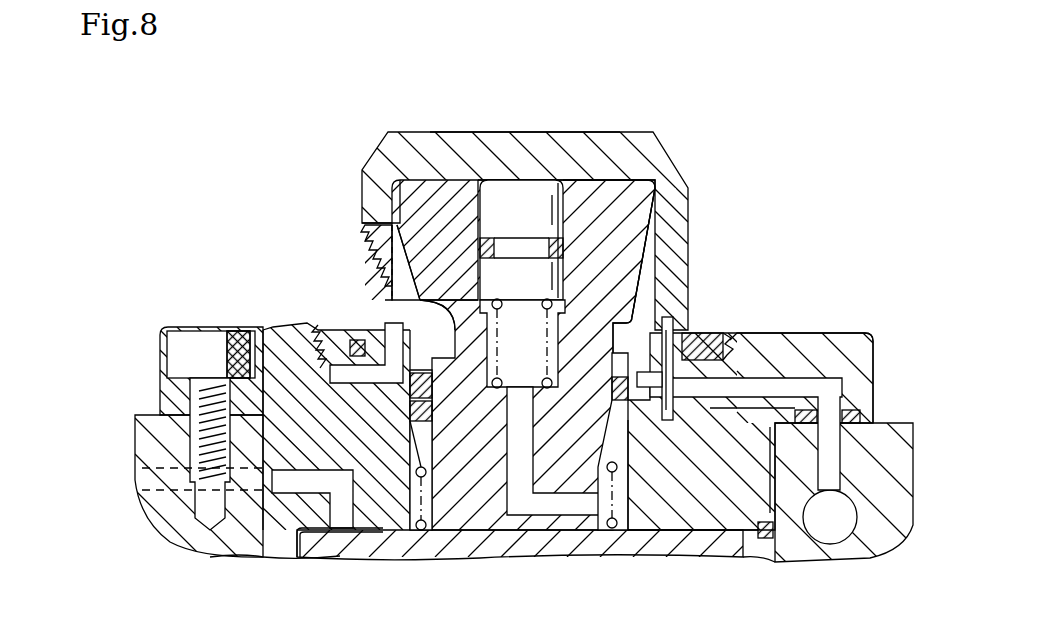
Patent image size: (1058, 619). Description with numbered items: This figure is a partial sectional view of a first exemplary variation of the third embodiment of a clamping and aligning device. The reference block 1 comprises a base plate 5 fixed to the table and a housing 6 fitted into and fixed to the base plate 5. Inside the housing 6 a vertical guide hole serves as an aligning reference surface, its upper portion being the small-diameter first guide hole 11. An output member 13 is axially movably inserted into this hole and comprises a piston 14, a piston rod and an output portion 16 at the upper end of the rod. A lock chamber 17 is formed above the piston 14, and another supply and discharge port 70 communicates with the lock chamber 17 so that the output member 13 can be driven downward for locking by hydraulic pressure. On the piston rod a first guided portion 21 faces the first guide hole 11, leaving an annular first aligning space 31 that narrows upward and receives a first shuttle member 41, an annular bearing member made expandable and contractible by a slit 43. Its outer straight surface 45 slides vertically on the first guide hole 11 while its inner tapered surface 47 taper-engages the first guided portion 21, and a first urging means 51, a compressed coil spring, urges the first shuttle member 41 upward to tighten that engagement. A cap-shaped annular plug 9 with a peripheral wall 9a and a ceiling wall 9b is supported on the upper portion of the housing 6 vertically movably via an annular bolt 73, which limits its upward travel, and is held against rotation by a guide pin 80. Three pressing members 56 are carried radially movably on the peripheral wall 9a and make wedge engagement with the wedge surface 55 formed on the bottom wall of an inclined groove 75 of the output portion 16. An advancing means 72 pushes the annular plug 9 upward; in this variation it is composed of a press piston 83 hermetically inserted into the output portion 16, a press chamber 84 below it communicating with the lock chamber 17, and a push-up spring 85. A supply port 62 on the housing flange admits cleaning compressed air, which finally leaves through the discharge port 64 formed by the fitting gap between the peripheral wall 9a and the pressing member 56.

The reference block 1 is at (858, 562).
The base plate 5 is at (900, 424).
The housing 6 is at (876, 346).
The annular plug 9 is at (372, 152).
The peripheral wall 9a is at (368, 186).
The ceiling wall 9b is at (487, 138).
The first guide hole 11 is at (410, 490).
The output member 13 is at (604, 188).
The piston 14 is at (378, 548).
The output portion 16 is at (432, 195).
The lock chamber 17 is at (308, 548).
The first guided portion 21 is at (440, 430).
The first aligning space 31 is at (410, 402).
The first shuttle member 41 is at (398, 418).
The slit 43 is at (638, 470).
The straight surface 45 is at (405, 450).
The tapered surface 47 is at (440, 448).
The first urging means 51 is at (458, 532).
The wedge surface 55 is at (410, 213).
The pressing member 56 is at (352, 244).
The supply port 62 is at (830, 378).
The discharge port 64 is at (377, 298).
The supply and discharge port 70 is at (158, 465).
The advancing means 72 is at (594, 256).
The annular bolt 73 is at (715, 330).
The inclined groove 75 is at (446, 325).
The guide pin 80 is at (668, 422).
The press piston 83 is at (536, 180).
The press chamber 84 is at (535, 342).
The push-up spring 85 is at (566, 378).